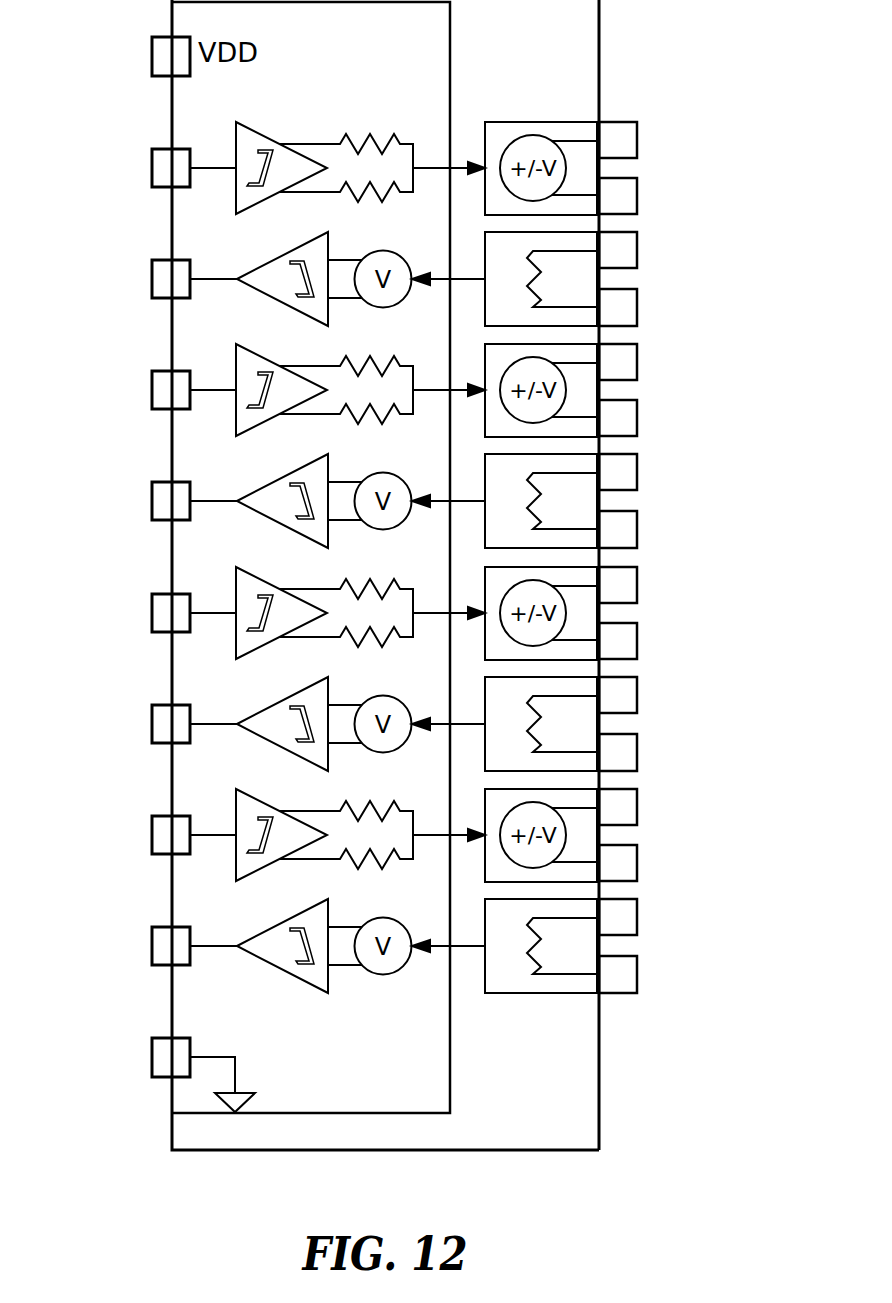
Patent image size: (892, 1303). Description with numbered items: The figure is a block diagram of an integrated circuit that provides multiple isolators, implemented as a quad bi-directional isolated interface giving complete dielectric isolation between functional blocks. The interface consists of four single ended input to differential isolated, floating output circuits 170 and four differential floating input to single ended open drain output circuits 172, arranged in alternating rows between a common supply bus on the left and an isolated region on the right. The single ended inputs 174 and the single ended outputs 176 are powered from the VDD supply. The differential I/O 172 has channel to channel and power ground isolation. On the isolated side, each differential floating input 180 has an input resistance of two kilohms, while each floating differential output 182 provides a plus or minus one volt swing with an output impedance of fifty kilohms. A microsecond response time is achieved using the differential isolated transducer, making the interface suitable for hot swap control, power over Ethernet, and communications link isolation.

The single ended input to differential isolated, floating output circuit 170 is at (236, 195).
The differential floating input to single ended open drain output circuit 172 is at (600, 278).
The single ended input 174 is at (152, 178).
The single ended output 176 is at (152, 270).
The differential floating input 180 is at (637, 242).
The floating differential output 182 is at (637, 138).